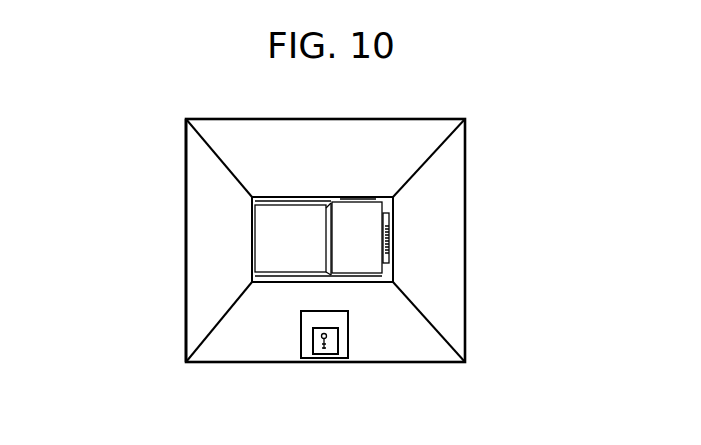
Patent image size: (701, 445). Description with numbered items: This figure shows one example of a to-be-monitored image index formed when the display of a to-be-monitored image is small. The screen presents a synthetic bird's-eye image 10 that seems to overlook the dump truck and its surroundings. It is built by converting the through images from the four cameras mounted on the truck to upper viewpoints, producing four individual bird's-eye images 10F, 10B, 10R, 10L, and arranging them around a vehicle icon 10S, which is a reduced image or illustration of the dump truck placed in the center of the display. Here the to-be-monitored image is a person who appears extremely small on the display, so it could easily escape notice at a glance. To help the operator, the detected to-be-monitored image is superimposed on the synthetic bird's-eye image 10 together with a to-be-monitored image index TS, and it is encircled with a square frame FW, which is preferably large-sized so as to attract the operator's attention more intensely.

The synthetic bird's-eye image 10 is at (466, 236).
The individual bird's-eye image (left) 10L is at (281, 139).
The individual bird's-eye image (right) 10R is at (405, 343).
The individual bird's-eye image (front) 10F is at (454, 172).
The individual bird's-eye image (back) 10B is at (203, 241).
The vehicle icon 10S is at (353, 218).
The square frame FW is at (350, 349).
The to-be-monitored image index TS is at (313, 338).